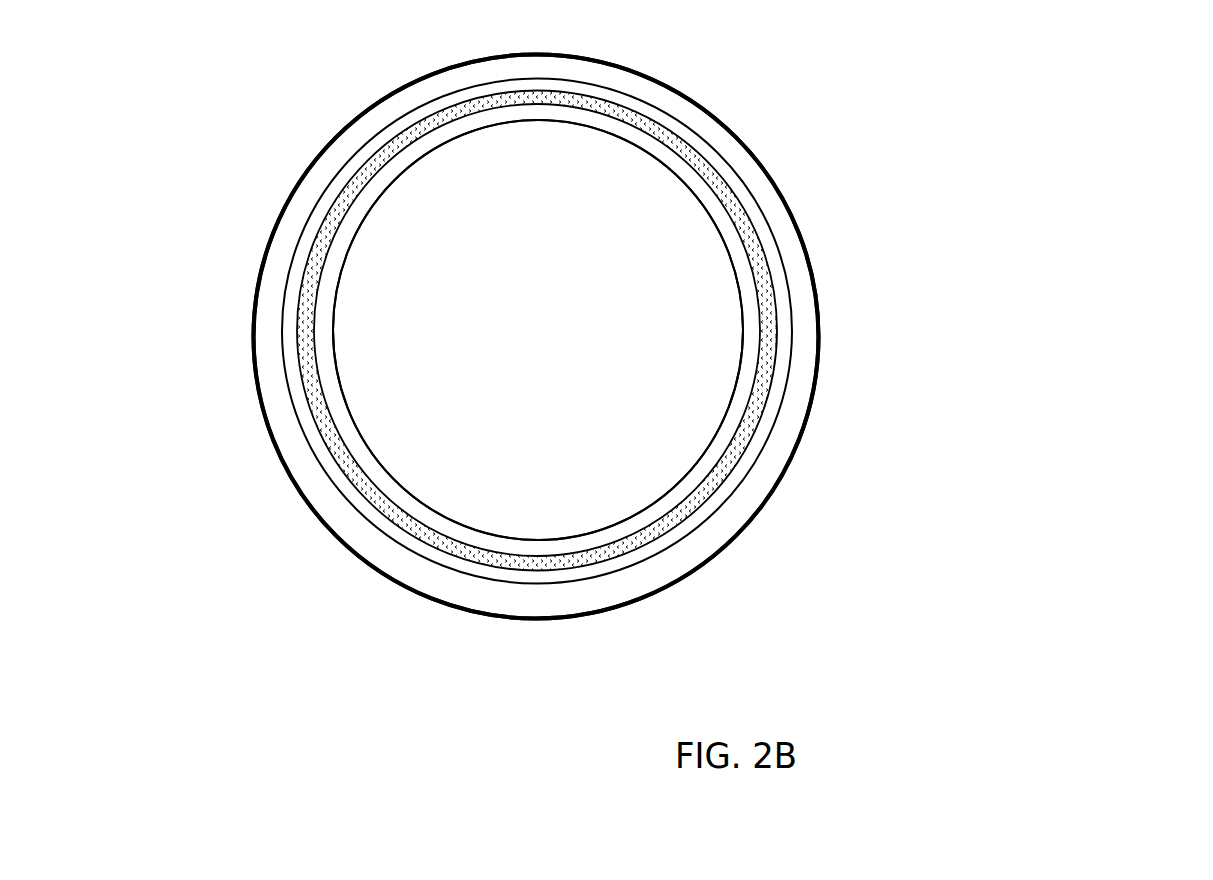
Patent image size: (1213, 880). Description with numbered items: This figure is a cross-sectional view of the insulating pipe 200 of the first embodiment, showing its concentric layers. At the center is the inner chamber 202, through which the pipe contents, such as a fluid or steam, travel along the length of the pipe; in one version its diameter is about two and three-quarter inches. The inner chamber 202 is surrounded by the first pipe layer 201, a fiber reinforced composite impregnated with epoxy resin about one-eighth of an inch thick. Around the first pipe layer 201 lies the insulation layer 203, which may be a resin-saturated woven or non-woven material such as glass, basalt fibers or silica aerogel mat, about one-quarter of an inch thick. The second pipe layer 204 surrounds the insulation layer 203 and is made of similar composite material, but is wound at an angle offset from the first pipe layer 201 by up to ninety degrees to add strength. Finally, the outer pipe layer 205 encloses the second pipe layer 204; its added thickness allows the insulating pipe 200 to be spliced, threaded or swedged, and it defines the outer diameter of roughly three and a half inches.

The insulating pipe 200 is at (289, 580).
The first pipe layer 201 is at (693, 180).
The inner chamber 202 is at (645, 303).
The insulation layer 203 is at (767, 362).
The second pipe layer 204 is at (761, 444).
The outer pipe layer 205 is at (737, 513).